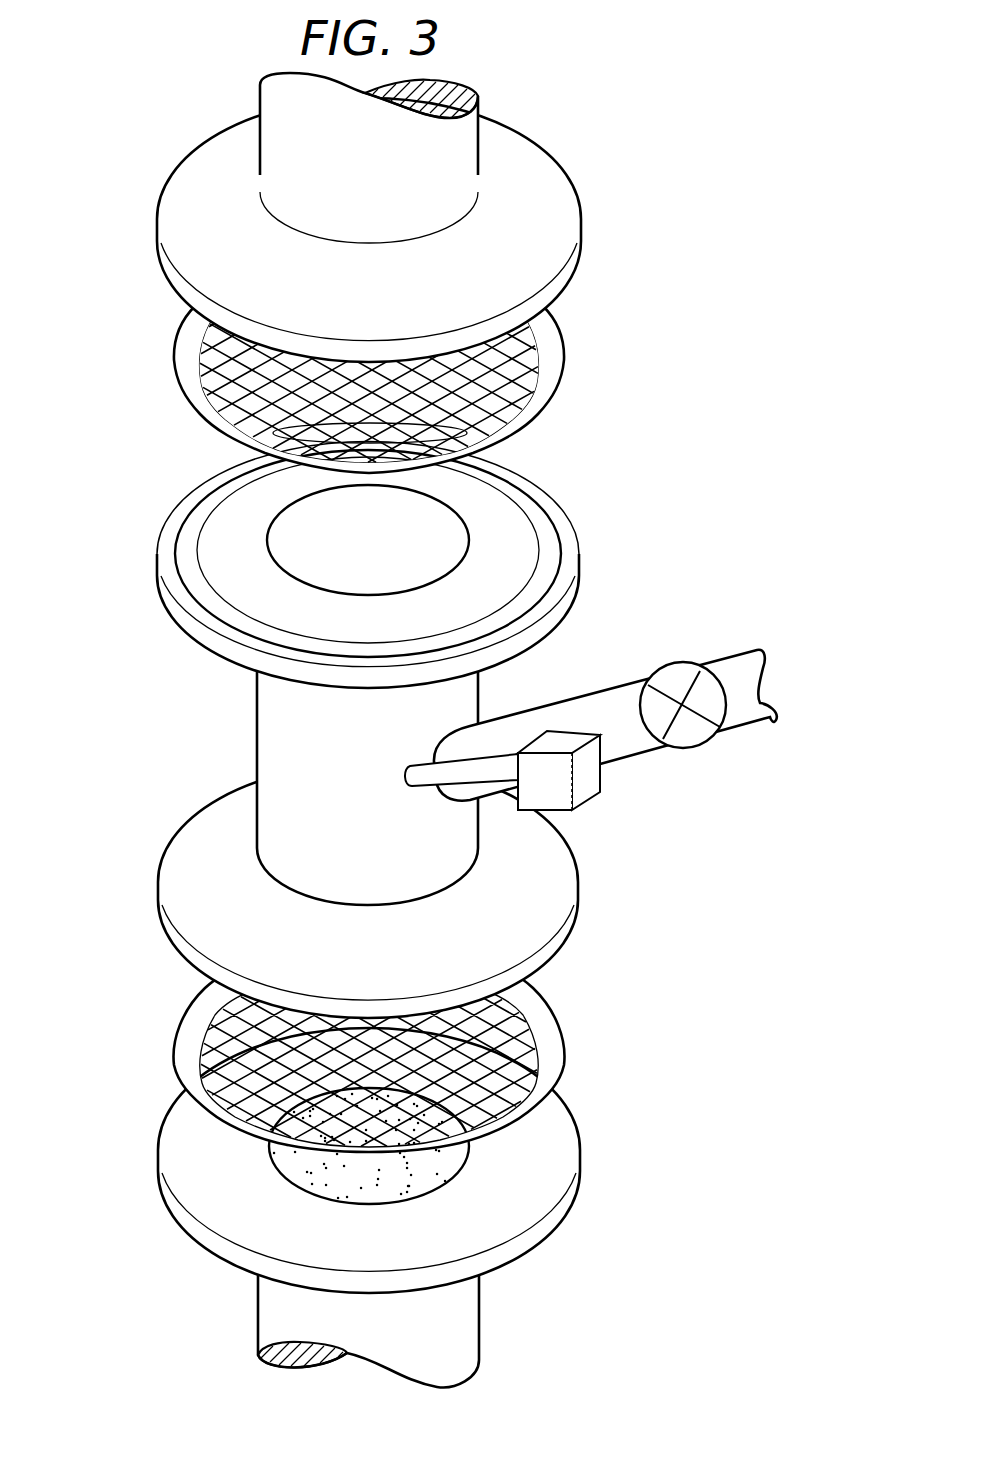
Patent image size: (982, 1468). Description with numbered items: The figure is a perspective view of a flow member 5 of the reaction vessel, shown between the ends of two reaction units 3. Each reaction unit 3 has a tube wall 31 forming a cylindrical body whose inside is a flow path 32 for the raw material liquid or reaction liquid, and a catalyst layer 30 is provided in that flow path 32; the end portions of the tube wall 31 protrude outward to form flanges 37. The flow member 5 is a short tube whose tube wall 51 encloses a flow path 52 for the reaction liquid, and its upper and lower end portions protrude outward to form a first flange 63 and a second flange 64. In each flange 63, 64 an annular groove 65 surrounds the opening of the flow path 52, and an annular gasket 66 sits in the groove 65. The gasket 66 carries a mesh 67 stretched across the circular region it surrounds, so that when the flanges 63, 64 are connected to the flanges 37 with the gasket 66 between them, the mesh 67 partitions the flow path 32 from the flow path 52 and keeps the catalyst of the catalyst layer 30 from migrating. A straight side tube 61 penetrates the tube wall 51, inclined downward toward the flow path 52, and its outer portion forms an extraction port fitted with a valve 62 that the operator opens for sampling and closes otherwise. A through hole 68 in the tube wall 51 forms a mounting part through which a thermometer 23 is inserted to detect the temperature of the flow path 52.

The reaction unit 3 is at (410, 730).
The tube wall 31 is at (465, 152).
The flange 37 is at (410, 697).
The gasket 66 is at (410, 710).
The mesh 67 is at (228, 1070).
The flow path 52 is at (467, 528).
The annular groove 65 is at (566, 543).
The flange 63 is at (419, 555).
The side tube 61 is at (605, 682).
The valve 62 is at (686, 750).
The flow member 5 is at (410, 720).
The tube wall 51 is at (253, 735).
The thermometer 23 is at (593, 803).
The through hole 68 is at (394, 780).
The flange 64 is at (565, 937).
The flow path 32 is at (470, 1165).
The catalyst layer 30 is at (382, 1192).